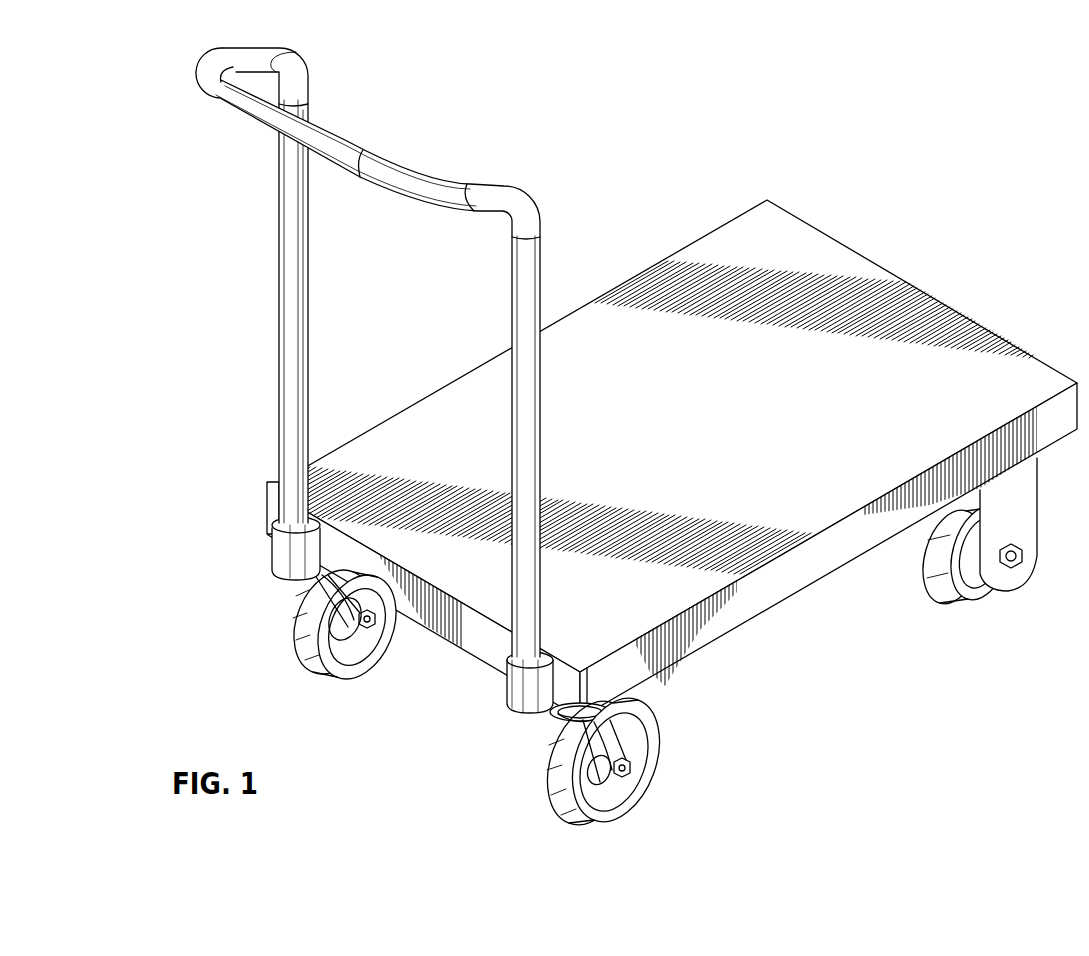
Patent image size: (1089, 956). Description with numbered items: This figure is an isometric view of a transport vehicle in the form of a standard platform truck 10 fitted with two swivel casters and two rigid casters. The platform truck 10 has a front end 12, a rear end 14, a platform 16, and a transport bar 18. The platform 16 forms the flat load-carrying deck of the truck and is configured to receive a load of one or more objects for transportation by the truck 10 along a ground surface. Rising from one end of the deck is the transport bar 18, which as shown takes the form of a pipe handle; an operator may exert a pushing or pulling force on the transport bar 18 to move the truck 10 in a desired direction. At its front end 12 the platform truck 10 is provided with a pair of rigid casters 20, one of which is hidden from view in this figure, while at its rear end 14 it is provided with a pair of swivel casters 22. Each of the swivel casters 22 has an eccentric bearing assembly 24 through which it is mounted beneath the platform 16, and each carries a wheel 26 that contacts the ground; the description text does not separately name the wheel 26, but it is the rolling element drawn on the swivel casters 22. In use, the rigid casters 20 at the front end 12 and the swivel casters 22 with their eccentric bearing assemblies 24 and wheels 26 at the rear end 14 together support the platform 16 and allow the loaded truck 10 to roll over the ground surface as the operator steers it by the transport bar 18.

The platform truck 10 is at (869, 128).
The front end 12 is at (672, 460).
The rear end 14 is at (492, 647).
The platform 16 is at (732, 443).
The transport bar 18 is at (200, 64).
The rigid casters 20 is at (1030, 573).
The swivel casters 22 is at (318, 630).
The eccentric bearing assemblies 24 is at (549, 716).
The caster wheel 26 is at (350, 673).